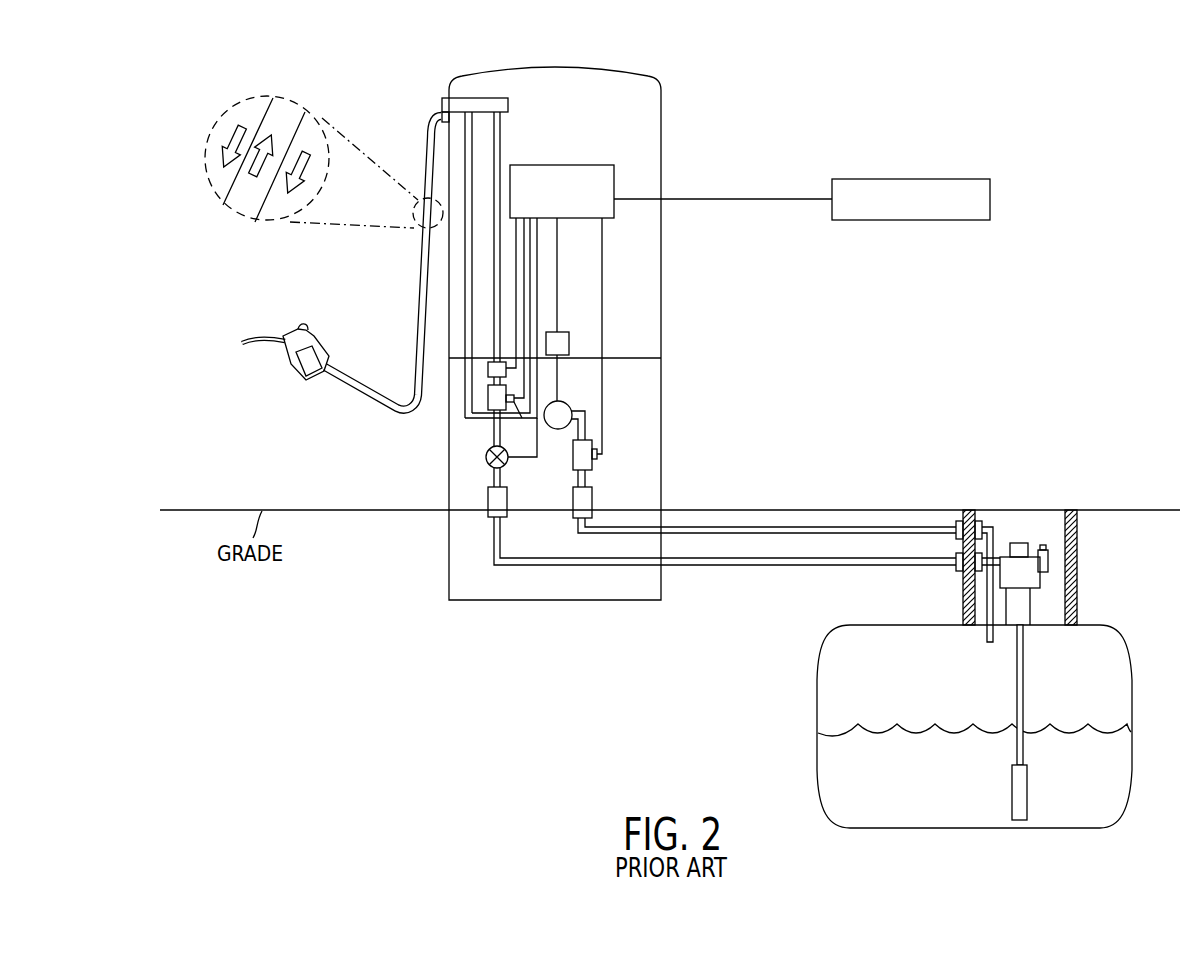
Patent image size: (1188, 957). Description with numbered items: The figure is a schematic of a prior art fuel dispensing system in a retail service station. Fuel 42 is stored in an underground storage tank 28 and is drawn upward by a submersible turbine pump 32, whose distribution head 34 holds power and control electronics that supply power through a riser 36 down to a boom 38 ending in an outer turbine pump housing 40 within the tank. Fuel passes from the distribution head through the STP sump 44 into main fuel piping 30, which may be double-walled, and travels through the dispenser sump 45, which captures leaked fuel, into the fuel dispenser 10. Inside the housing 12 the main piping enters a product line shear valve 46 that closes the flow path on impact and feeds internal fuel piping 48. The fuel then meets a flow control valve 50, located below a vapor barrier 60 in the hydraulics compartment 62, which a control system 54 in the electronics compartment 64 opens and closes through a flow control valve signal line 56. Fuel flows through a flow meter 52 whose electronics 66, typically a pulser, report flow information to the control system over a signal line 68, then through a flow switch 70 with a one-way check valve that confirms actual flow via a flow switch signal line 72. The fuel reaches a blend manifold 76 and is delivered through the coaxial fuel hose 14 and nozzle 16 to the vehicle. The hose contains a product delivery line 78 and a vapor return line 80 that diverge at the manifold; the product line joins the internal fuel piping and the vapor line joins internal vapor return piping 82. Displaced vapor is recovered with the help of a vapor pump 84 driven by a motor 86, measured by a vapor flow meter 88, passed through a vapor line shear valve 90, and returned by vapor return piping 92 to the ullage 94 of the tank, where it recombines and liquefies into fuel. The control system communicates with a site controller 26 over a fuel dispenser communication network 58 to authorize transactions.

The fuel dispenser 10 is at (745, 102).
The housing 12 is at (662, 135).
The fuel hose 14 is at (431, 120).
The nozzle 16 is at (298, 324).
The site controller 26 is at (932, 179).
The underground storage tank 28 is at (1110, 630).
The main fuel piping 30 is at (781, 568).
The submersible turbine pump 32 is at (1040, 530).
The distribution head 34 is at (1025, 575).
The riser 36 is at (1024, 607).
The boom 38 is at (1024, 690).
The outer turbine pump housing 40 is at (1027, 792).
The fuel 42 is at (1117, 758).
The STP sump 44 is at (1048, 560).
The dispenser sump 45 is at (448, 543).
The product line shear valve 46 is at (488, 502).
The internal fuel piping 48 is at (510, 266).
The flow control valve 50 is at (487, 455).
The flow meter 52 is at (490, 398).
The control system 54 is at (553, 165).
The flow control valve signal line 56 is at (534, 392).
The fuel dispenser communication network 58 is at (757, 199).
The vapor barrier 60 is at (633, 358).
The hydraulics compartment 62 is at (650, 384).
The electronics compartment 64 is at (650, 330).
The electronics 66 is at (522, 429).
The signal line 68 is at (525, 283).
The flow switch 70 is at (490, 368).
The flow switch signal line 72 is at (510, 295).
The blend manifold 76 is at (482, 105).
The product delivery line 78 is at (252, 104).
The vapor return line 80 is at (291, 108).
The internal vapor return piping 82 is at (463, 266).
The vapor pump 84 is at (563, 412).
The motor 86 is at (560, 332).
The vapor flow meter 88 is at (592, 462).
The vapor line shear valve 90 is at (578, 500).
The vapor return piping 92 is at (842, 535).
The ullage 94 is at (1117, 695).